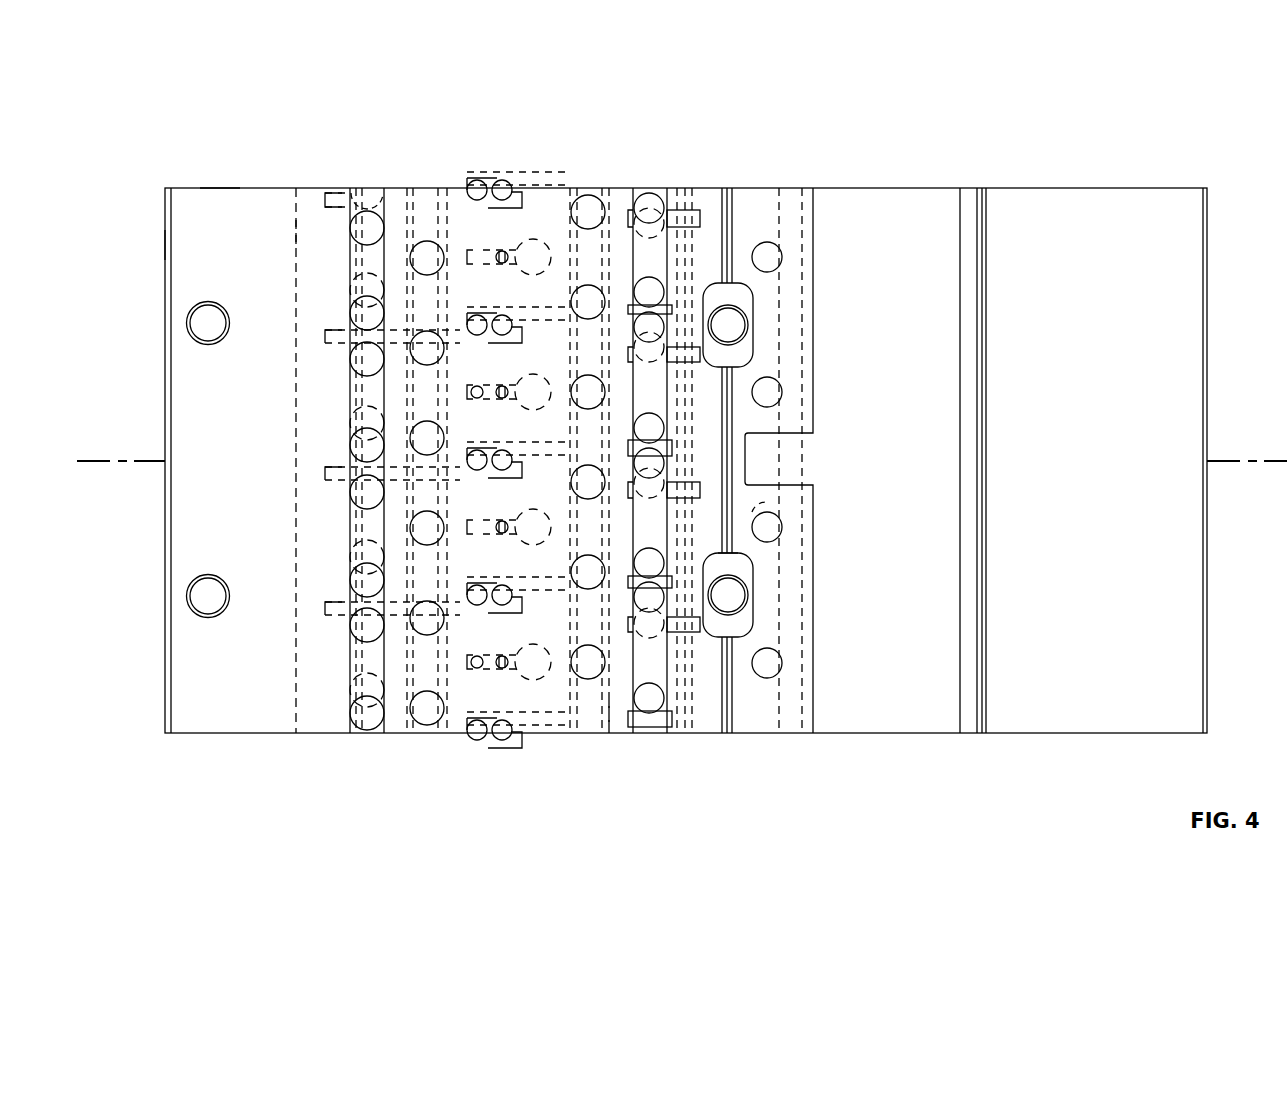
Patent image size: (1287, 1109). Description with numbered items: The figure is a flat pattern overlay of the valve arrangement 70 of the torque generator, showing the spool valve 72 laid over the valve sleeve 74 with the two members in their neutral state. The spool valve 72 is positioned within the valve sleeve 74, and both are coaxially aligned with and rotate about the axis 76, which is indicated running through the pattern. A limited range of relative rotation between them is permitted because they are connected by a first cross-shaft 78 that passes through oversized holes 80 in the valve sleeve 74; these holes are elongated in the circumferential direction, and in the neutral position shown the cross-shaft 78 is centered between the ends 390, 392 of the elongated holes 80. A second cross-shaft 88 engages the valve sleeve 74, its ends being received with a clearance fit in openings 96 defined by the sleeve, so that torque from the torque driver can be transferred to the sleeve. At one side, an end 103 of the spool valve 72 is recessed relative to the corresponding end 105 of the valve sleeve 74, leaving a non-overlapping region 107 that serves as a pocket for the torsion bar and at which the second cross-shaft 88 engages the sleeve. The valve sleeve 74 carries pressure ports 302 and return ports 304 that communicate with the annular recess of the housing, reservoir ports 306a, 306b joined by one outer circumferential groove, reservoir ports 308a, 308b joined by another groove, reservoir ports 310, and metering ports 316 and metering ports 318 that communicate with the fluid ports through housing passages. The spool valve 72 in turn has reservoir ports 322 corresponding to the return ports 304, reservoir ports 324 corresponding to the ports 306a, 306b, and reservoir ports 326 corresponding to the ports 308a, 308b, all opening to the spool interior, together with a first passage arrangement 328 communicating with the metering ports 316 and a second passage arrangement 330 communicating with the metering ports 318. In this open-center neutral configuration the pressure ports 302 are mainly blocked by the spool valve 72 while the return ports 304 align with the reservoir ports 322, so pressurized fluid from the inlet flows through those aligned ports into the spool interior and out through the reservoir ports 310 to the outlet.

The valve arrangement 70 is at (401, 776).
The spool valve 72 is at (267, 723).
The valve sleeve 74 is at (873, 732).
The axis 76 is at (90, 461).
The first cross-shaft 78 is at (747, 313).
The oversized holes 80 is at (755, 340).
The second cross-shaft 88 is at (187, 320).
The openings 96 is at (197, 345).
The end of the spool valve 103 is at (293, 233).
The end of the valve sleeve 105 is at (160, 238).
The non-overlapping region 107 is at (222, 189).
The pressure ports 302 is at (503, 607).
The return ports 304 is at (477, 663).
The reservoir port 306a is at (350, 358).
The reservoir port 306b is at (350, 323).
The reservoir port 308a is at (666, 328).
The reservoir port 308b is at (655, 278).
The reservoir ports 310 is at (782, 257).
The metering ports 316 is at (424, 242).
The metering ports 318 is at (584, 197).
The reservoir ports 322 is at (535, 237).
The reservoir ports 324 is at (330, 262).
The reservoir ports 326 is at (632, 340).
The first passage arrangement 328 is at (436, 215).
The second passage arrangement 330 is at (623, 738).
The end of elongated hole 390 is at (730, 555).
The end of elongated hole 392 is at (717, 633).